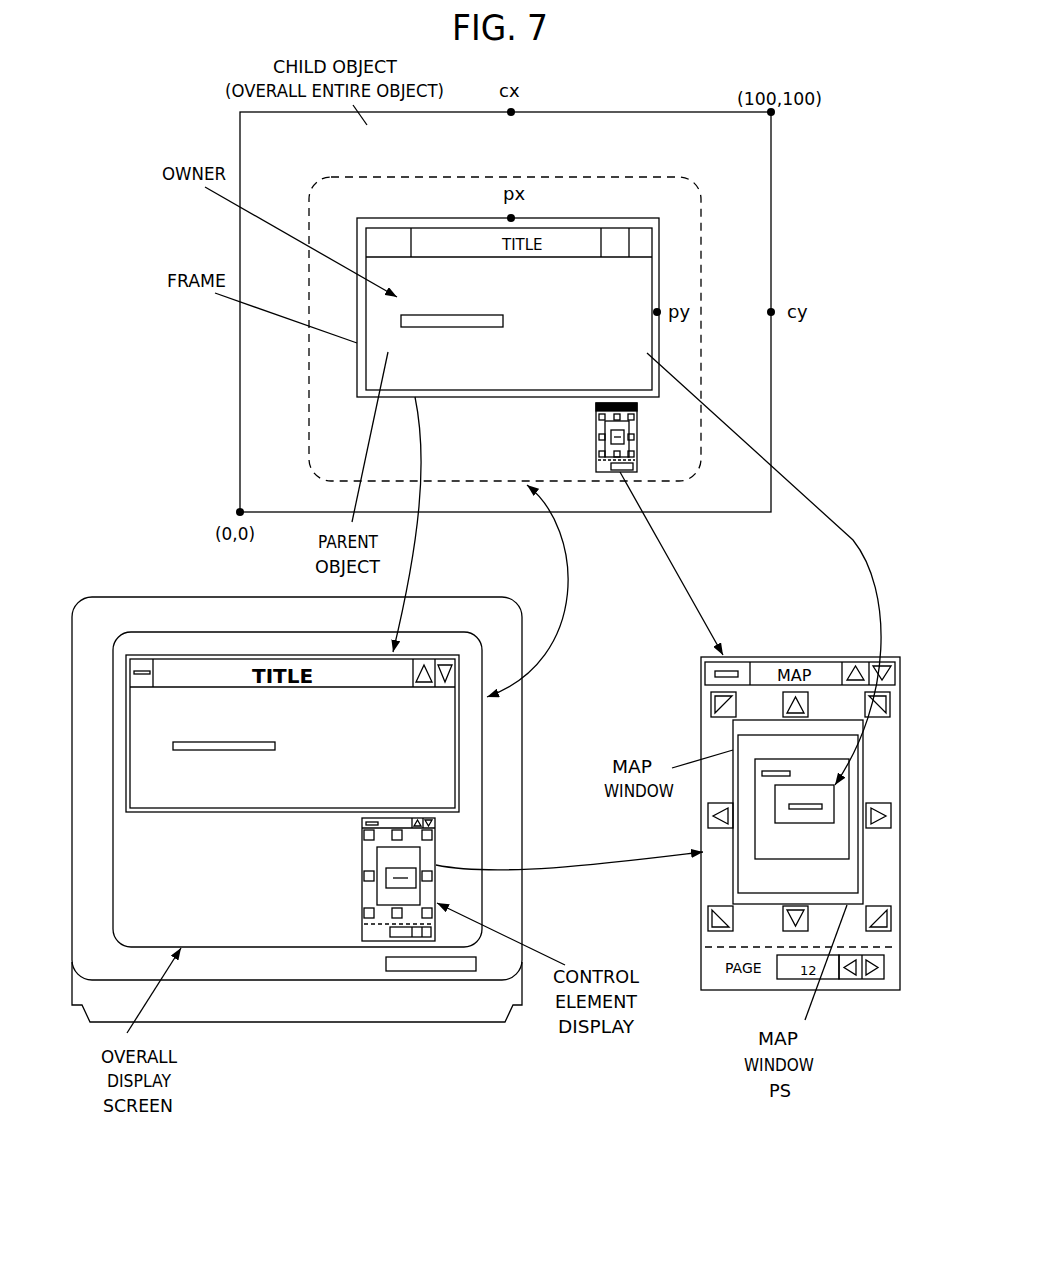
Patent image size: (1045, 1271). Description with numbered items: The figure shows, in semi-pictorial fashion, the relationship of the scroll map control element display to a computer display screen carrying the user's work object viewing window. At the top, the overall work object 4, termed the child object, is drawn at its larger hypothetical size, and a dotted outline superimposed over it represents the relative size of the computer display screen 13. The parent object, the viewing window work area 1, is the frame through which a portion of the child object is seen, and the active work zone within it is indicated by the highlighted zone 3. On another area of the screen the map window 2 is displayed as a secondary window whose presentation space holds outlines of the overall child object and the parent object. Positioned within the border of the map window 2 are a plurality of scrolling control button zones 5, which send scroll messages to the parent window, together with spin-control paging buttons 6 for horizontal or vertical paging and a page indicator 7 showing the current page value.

The viewing window work area 1 is at (125, 715).
The map window 2 is at (704, 740).
The highlighted zone 3 is at (475, 327).
The overall work object 4 is at (773, 415).
The scrolling control button zones 5 is at (890, 707).
The paging buttons 6 is at (884, 975).
The page indicator 7 is at (850, 978).
The computer display screen 13 is at (703, 237).